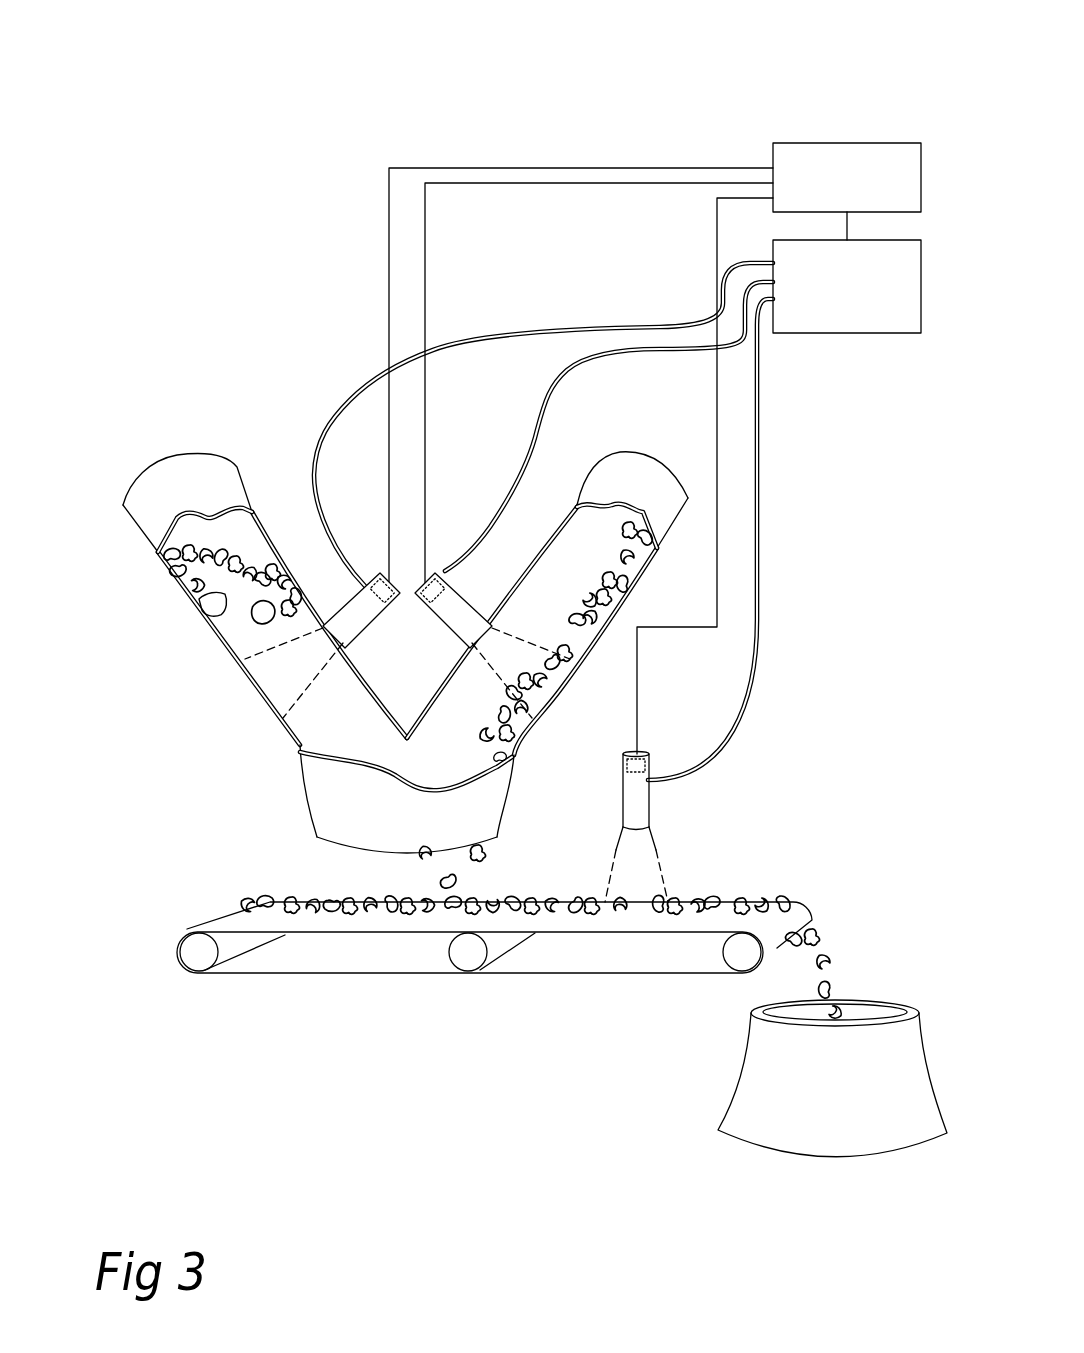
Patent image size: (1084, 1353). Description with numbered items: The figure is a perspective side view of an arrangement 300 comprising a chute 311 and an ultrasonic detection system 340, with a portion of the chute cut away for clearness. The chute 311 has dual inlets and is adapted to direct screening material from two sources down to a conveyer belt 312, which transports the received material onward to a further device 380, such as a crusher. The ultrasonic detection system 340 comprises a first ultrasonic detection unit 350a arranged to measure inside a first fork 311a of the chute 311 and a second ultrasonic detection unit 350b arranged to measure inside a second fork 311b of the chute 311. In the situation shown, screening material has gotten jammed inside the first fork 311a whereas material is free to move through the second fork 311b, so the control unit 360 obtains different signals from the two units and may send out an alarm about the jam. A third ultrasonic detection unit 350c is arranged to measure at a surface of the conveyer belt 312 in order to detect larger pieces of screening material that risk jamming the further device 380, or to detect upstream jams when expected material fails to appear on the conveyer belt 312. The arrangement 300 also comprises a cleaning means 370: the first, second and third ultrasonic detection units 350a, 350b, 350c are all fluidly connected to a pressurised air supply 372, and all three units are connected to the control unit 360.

The arrangement 300 is at (216, 268).
The chute 311 is at (206, 697).
The first fork of the chute 311a is at (168, 448).
The second fork of the chute 311b is at (658, 448).
The conveyer belt 312 is at (169, 985).
The ultrasonic detection system 340 is at (730, 88).
The first ultrasonic detection unit 350a is at (373, 560).
The second ultrasonic detection unit 350b is at (450, 558).
The third ultrasonic detection unit 350c is at (654, 749).
The control unit 360 is at (847, 177).
The cleaning means 370 is at (632, 278).
The pressurised air supply 372 is at (847, 286).
The further device 380 is at (711, 1099).